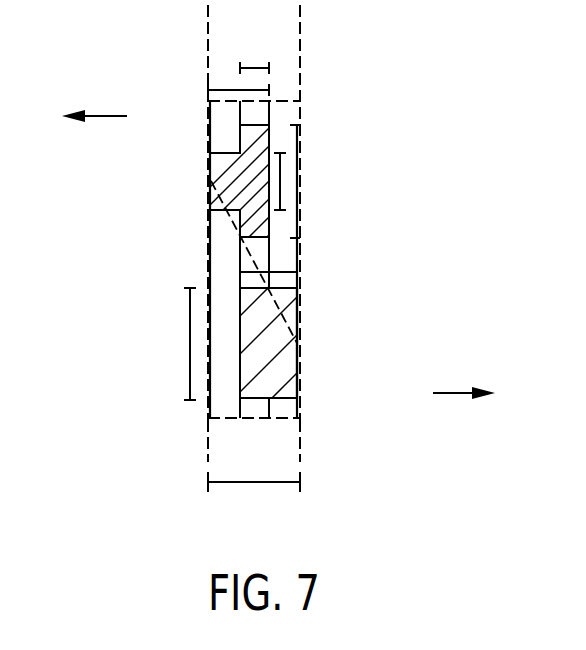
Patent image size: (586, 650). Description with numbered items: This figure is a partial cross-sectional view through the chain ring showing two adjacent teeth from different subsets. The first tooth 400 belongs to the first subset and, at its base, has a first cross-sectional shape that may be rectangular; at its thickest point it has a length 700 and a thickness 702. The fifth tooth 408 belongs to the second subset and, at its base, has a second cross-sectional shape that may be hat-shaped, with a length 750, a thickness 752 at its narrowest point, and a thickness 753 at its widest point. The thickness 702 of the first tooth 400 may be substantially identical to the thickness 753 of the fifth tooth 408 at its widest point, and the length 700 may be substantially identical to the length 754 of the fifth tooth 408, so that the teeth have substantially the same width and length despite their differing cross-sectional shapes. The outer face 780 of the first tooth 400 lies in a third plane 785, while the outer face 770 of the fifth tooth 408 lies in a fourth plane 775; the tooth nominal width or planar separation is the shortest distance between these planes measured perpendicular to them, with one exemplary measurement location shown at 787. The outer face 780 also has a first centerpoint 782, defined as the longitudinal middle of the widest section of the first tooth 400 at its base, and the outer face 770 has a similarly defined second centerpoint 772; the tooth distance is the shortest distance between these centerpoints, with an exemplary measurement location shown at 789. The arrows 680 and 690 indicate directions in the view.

The first tooth 400 is at (299, 323).
The fifth tooth 408 is at (240, 226).
The direction arrow 680 is at (463, 380).
The direction arrow 690 is at (94, 101).
The length of the first tooth 700 is at (189, 345).
The thickness of the first tooth 702 is at (286, 258).
The length of the fifth tooth 750 is at (299, 190).
The thickness at narrowest point 752 is at (253, 66).
The thickness at widest point 753 is at (233, 88).
The length of the fifth tooth 754 is at (289, 182).
The outer face of the fifth tooth 770 is at (209, 162).
The second centerpoint 772 is at (209, 183).
The fourth plane 775 is at (208, 430).
The outer face of the first tooth 780 is at (299, 302).
The first centerpoint 782 is at (300, 343).
The third plane 785 is at (300, 430).
The tooth planar separation measurement location 787 is at (255, 483).
The tooth distance measurement location 789 is at (244, 246).